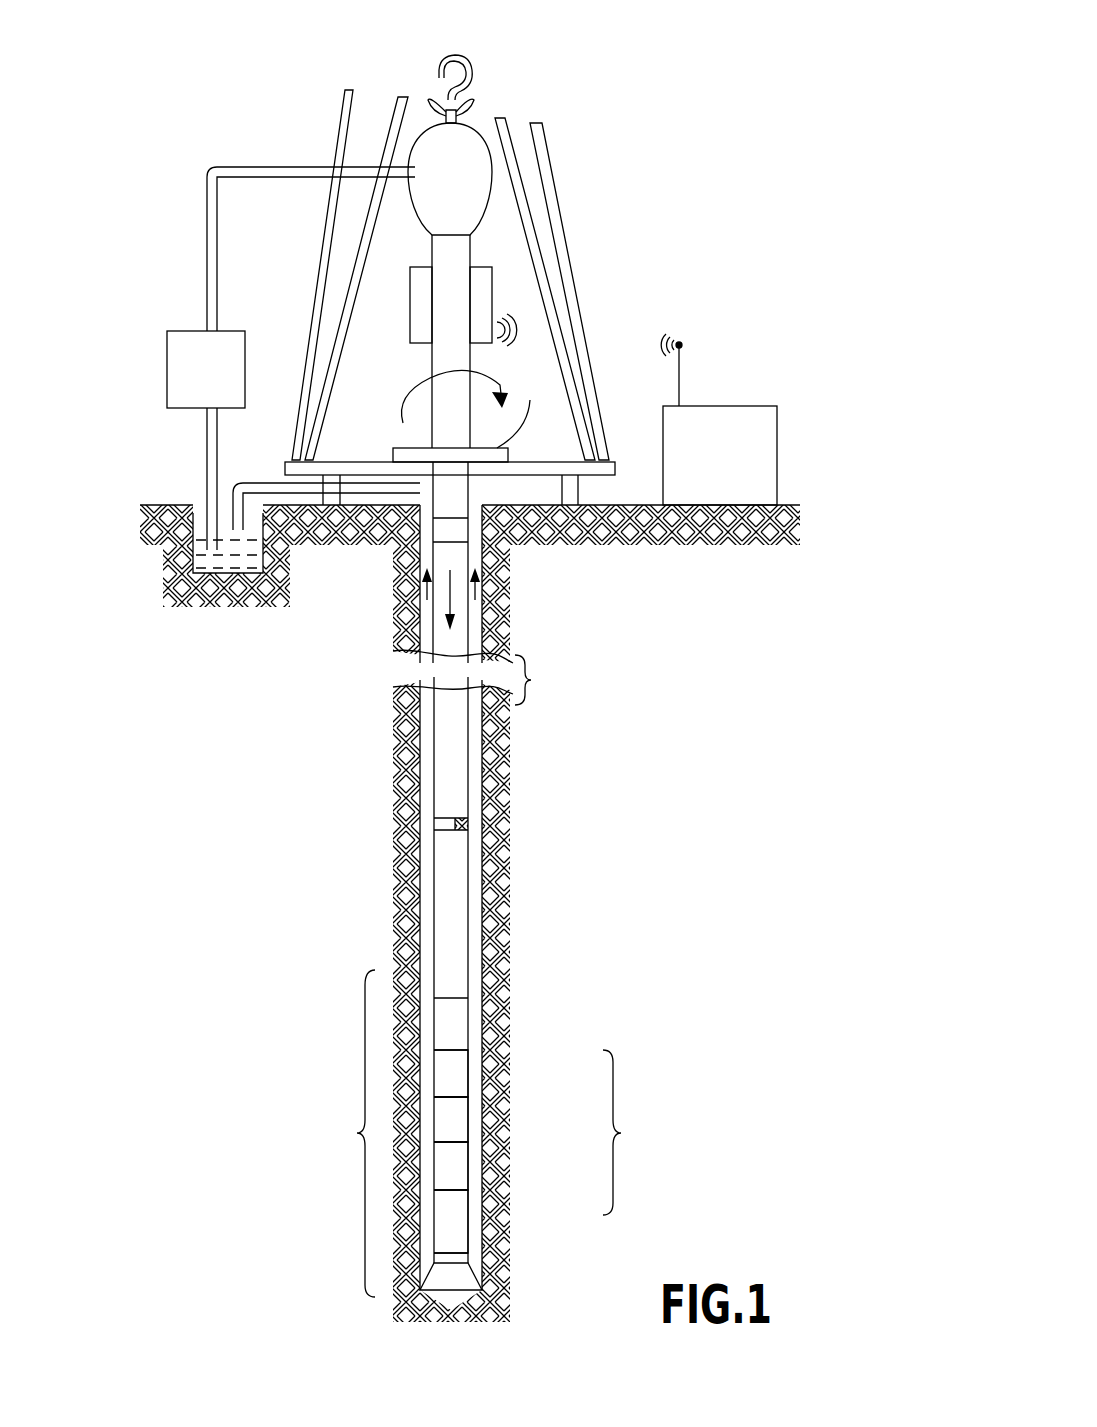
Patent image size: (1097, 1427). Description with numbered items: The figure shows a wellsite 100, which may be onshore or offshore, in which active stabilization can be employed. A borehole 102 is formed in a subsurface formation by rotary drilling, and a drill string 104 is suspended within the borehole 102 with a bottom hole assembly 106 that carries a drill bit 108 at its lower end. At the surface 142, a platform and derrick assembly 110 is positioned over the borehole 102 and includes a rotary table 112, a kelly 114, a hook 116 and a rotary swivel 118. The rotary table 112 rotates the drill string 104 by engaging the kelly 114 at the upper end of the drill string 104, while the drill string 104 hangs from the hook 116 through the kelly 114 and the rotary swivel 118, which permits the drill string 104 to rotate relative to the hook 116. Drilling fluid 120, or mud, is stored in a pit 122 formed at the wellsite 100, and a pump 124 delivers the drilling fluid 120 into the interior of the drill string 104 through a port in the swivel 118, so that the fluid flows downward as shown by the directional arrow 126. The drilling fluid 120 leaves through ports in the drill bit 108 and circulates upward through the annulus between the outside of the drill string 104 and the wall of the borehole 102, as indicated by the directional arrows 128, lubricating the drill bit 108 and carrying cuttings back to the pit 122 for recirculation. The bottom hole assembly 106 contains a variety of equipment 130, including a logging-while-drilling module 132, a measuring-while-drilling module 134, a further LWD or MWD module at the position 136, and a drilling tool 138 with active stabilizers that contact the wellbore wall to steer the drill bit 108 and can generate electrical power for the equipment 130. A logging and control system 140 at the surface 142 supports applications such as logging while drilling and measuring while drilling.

The wellsite 100 is at (815, 22).
The borehole 102 is at (495, 543).
The drill string 104 is at (443, 495).
The bottom hole assembly 106 is at (342, 1133).
The drill bit 108 is at (455, 1280).
The platform and derrick assembly 110 is at (585, 180).
The rotary table 112 is at (480, 409).
The kelly 114 is at (450, 362).
The hook 116 is at (438, 68).
The rotary swivel 118 is at (420, 205).
The drilling fluid 120 is at (232, 562).
The pit 122 is at (195, 492).
The pump 124 is at (167, 372).
The directional arrow 126 is at (450, 615).
The directional arrows 128 is at (425, 600).
The equipment 130 is at (638, 1132).
The logging-while-drilling module 132 is at (452, 1080).
The measuring-while-drilling module 134 is at (453, 1130).
The additional LWD and/or MWD module 136 is at (455, 1167).
The drilling tool 138 is at (452, 1215).
The logging and control system 140 is at (740, 406).
The surface 142 is at (800, 498).